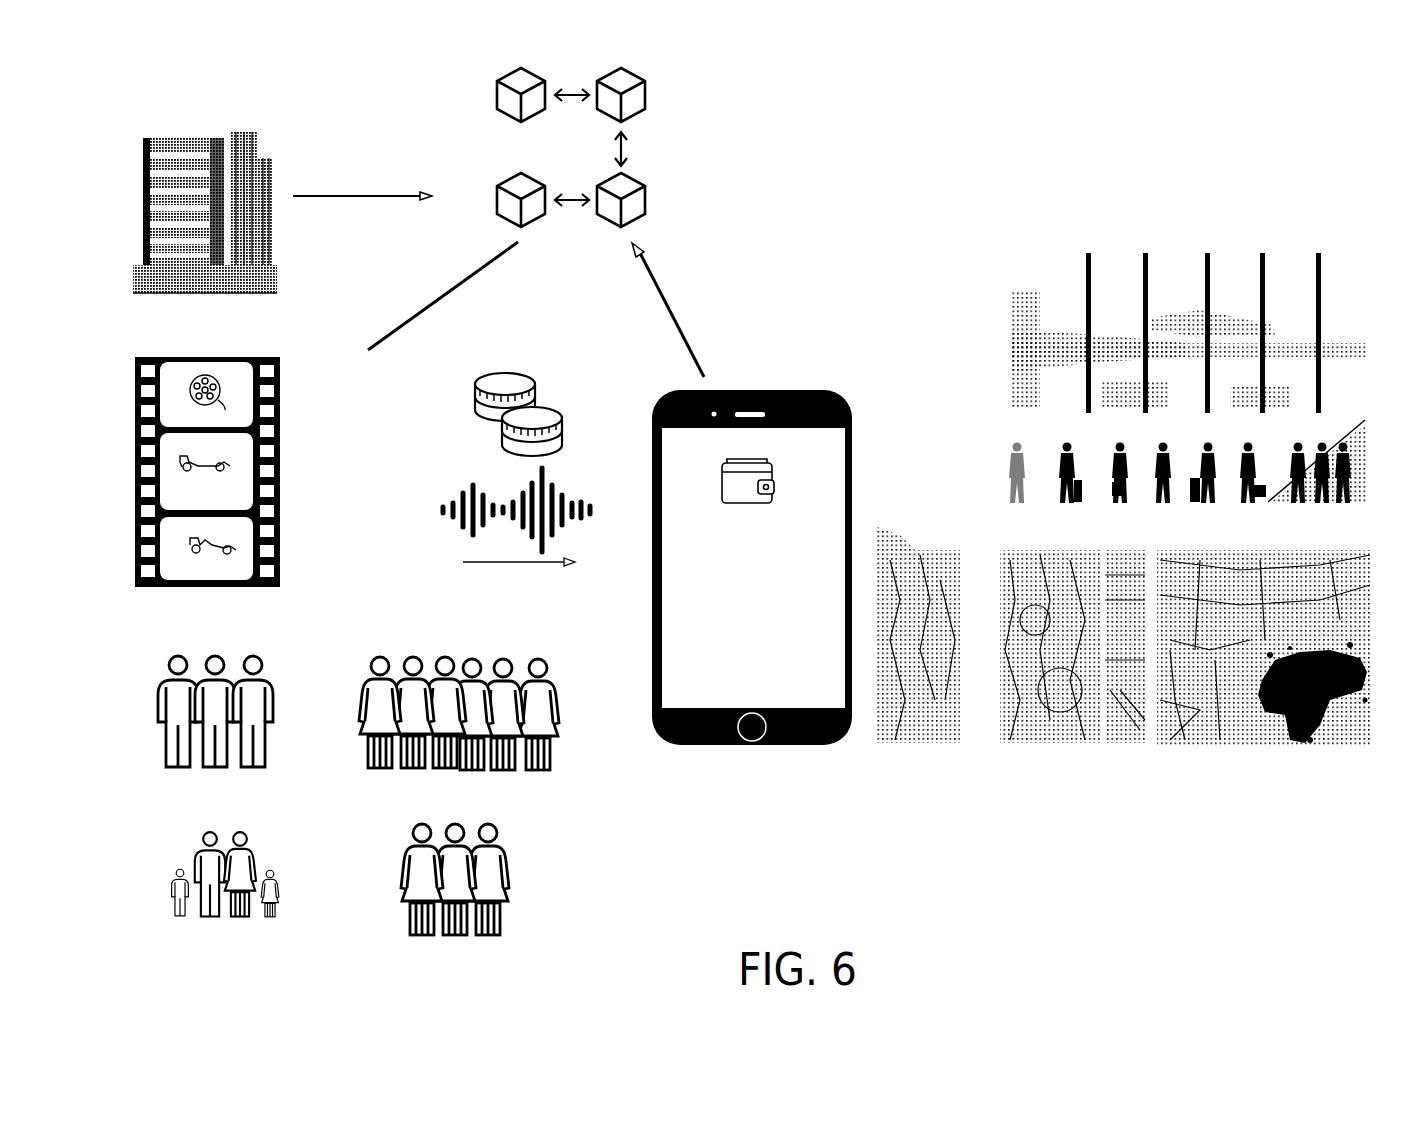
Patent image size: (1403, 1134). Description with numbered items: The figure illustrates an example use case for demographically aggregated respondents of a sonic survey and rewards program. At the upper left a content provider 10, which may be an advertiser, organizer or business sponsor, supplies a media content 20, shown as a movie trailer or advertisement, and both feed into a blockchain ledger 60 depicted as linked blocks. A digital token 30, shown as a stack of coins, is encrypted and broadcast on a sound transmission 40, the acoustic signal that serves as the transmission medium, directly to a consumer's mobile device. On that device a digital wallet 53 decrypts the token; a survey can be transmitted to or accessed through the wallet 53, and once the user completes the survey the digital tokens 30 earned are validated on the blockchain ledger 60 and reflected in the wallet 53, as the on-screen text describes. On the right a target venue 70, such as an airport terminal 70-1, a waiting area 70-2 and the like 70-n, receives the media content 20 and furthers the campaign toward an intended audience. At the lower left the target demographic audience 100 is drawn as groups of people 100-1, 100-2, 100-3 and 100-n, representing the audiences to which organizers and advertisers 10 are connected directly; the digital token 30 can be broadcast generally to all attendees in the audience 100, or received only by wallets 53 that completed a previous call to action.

The content provider 10 is at (205, 184).
The media content 20 is at (207, 451).
The digital token 30 is at (496, 414).
The sound transmission 40 is at (516, 539).
The digital wallet 53 is at (750, 478).
The blockchain ledger 60 is at (571, 147).
The target venue 70 is at (1123, 489).
The airport terminal 70-1 is at (1153, 378).
The waiting area 70-2 is at (1011, 652).
The other target venue 70-n is at (1263, 667).
The target demographic audience 100 is at (358, 795).
The first demographic audience group 100-1 is at (215, 740).
The second demographic audience group 100-2 is at (459, 737).
The third demographic audience group 100-3 is at (225, 898).
The nth demographic audience group 100-n is at (455, 903).